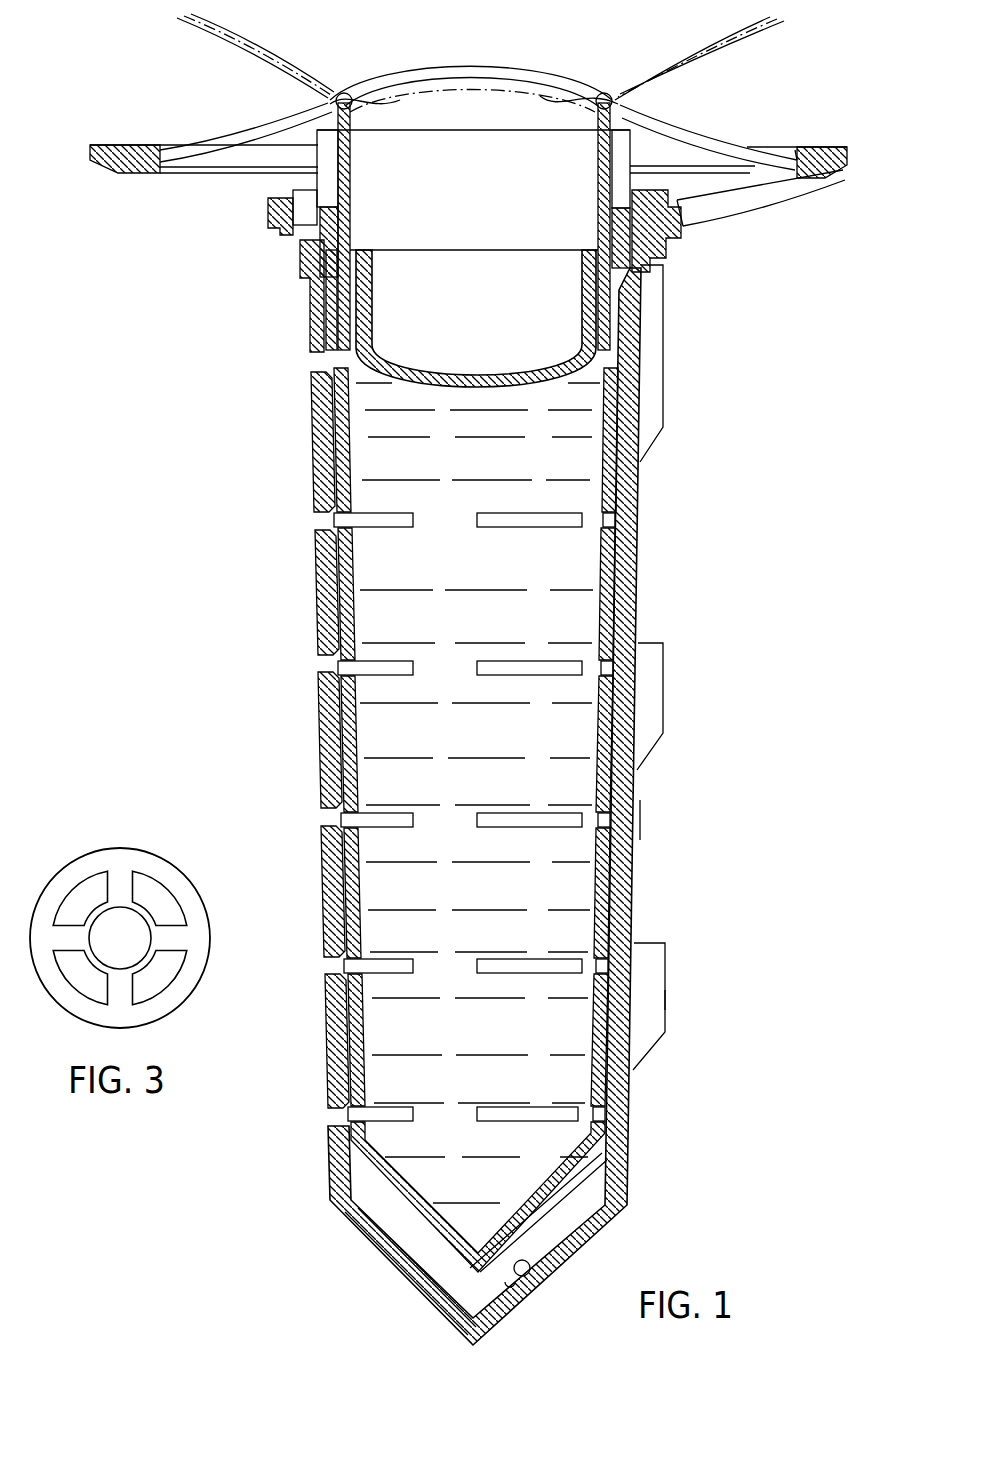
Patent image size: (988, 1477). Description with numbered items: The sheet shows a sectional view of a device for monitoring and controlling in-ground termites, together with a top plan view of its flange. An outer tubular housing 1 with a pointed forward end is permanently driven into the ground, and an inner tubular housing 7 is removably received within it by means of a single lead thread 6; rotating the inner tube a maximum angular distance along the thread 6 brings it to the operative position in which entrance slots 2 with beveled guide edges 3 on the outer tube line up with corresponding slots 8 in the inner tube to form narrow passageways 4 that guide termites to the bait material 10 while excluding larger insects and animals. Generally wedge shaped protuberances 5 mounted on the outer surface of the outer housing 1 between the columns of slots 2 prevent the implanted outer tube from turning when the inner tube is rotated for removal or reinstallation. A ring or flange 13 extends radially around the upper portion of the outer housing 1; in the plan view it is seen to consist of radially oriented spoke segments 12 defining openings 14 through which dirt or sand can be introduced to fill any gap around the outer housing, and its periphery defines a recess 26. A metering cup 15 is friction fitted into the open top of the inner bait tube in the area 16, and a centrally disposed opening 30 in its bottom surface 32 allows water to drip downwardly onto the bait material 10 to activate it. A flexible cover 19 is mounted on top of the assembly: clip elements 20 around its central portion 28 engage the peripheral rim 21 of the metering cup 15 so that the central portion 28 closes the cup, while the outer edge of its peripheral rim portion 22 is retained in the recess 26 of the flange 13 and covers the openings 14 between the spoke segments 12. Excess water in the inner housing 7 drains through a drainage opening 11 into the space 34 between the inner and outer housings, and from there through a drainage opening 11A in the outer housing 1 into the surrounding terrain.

In FIG. 1, the outer tubular housing 1 is at (643, 556).
In FIG. 1, the entrance slots 2 is at (632, 667).
In FIG. 1, the beveled guide edges 3 is at (640, 822).
In FIG. 1, the passageway 4 is at (634, 965).
In FIG. 1, the wedge shaped protuberances 5 is at (666, 1003).
In FIG. 1, the single lead thread 6 is at (652, 270).
In FIG. 1, the inner tubular housing 7 is at (630, 330).
In FIG. 1, the slots 8 is at (618, 360).
In FIG. 1, the bait material 10 is at (372, 427).
In FIG. 1, the drainage opening 11 is at (512, 1215).
In FIG. 1, the drainage opening 11A is at (530, 1277).
In FIG. 1, the spoke segments 12 is at (763, 203).
In FIG. 3, the spoke segments 12 is at (187, 922).
In FIG. 1, the flange 13 is at (848, 162).
In FIG. 3, the flange 13 is at (210, 966).
In FIG. 3, the openings 14 is at (158, 970).
In FIG. 1, the metering cup 15 is at (330, 300).
In FIG. 1, the friction fit area 16 is at (330, 240).
In FIG. 1, the flexible cover 19 is at (562, 96).
In FIG. 1, the clip elements 20 is at (325, 108).
In FIG. 1, the peripheral rim 21 is at (322, 95).
In FIG. 1, the peripheral rim portion 22 is at (683, 126).
In FIG. 1, the recess 26 is at (800, 150).
In FIG. 1, the central portion 28 is at (505, 57).
In FIG. 1, the opening 30 is at (470, 375).
In FIG. 1, the bottom surface 32 is at (508, 392).
In FIG. 1, the space 34 is at (410, 1245).